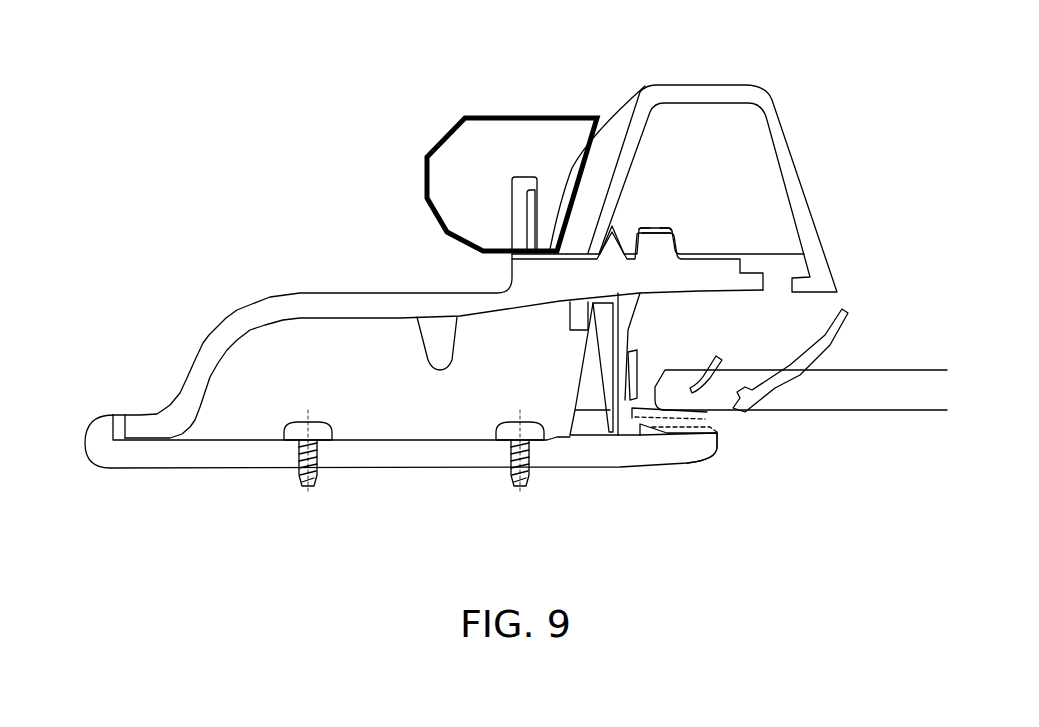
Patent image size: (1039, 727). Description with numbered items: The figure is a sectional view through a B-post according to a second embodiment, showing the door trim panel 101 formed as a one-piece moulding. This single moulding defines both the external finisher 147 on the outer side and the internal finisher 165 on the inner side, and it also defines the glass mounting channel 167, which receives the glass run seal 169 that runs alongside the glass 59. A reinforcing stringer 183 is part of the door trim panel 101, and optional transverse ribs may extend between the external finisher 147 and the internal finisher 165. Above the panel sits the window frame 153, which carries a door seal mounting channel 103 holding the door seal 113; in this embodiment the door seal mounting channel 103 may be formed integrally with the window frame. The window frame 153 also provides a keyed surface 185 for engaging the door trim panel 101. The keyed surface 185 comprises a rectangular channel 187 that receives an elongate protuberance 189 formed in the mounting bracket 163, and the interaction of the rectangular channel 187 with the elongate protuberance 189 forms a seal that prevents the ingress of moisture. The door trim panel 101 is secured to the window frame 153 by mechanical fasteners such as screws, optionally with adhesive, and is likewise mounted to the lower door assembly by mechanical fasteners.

The roof panel 59 is at (882, 387).
The door trim panel 101 is at (142, 363).
The door seal mounting channel 103 is at (550, 213).
The door seal 113 is at (440, 130).
The external finisher 147 is at (148, 460).
The window frame 153 is at (790, 160).
The mounting bracket 163 is at (517, 277).
The internal finisher 165 is at (242, 320).
The glass mounting channel 167 is at (728, 437).
The glass run seal 169 is at (712, 415).
The reinforcing stringer 183 is at (593, 380).
The keyed surface 185 is at (662, 257).
The rectangular channel 187 is at (662, 230).
The elongate protuberance 189 is at (652, 250).